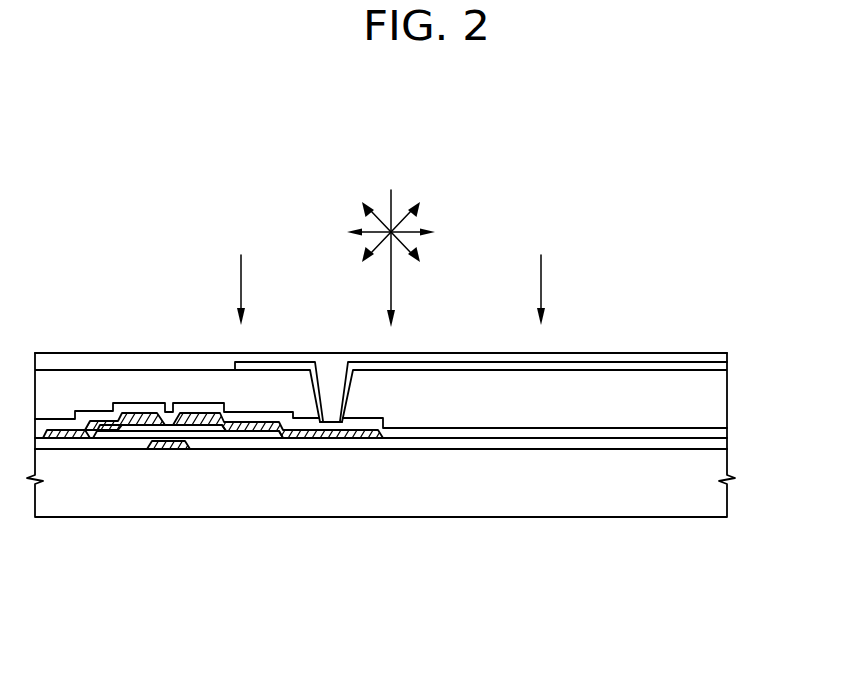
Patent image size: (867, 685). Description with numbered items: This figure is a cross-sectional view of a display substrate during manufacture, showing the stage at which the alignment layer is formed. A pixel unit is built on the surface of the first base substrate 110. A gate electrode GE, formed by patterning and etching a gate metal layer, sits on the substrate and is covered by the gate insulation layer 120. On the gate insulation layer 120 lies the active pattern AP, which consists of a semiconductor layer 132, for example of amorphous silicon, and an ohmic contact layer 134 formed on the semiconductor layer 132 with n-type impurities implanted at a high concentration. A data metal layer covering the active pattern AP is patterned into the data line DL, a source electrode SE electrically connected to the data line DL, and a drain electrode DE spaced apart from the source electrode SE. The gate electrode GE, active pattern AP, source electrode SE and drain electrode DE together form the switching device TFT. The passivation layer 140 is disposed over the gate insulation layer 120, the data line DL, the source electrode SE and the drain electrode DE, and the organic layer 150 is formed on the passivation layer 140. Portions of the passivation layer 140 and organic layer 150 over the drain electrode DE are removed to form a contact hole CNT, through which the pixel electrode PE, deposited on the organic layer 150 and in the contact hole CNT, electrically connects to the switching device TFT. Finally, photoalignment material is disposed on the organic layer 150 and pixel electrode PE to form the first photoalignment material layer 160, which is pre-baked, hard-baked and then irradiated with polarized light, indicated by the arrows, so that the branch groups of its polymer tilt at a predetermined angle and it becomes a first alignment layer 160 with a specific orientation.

The first base substrate 110 is at (727, 472).
The gate insulation layer 120 is at (727, 449).
The gate electrode GE is at (165, 448).
The semiconductor layer 132 is at (226, 432).
The ohmic contact layer 134 is at (247, 432).
The active pattern AP is at (210, 518).
The source electrode SE is at (112, 421).
The drain electrode DE is at (218, 420).
The data line DL is at (64, 432).
The switching device TFT is at (217, 527).
The passivation layer 140 is at (727, 430).
The organic layer 150 is at (727, 394).
The contact hole CNT is at (327, 398).
The pixel electrode PE is at (727, 362).
The first photoalignment material layer 160 is at (727, 353).